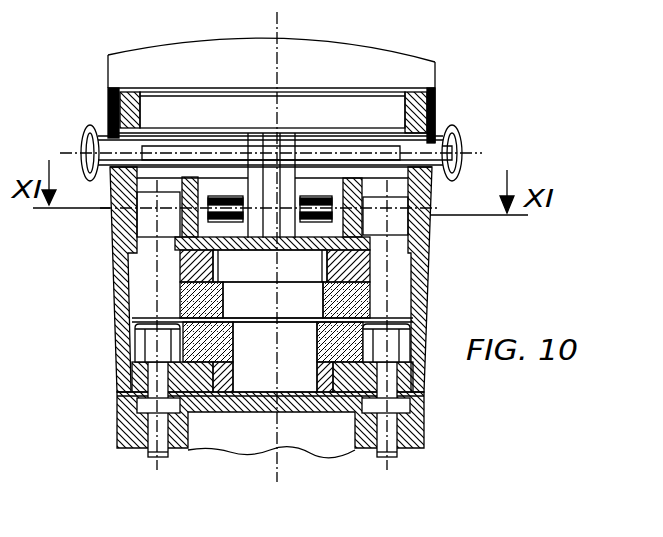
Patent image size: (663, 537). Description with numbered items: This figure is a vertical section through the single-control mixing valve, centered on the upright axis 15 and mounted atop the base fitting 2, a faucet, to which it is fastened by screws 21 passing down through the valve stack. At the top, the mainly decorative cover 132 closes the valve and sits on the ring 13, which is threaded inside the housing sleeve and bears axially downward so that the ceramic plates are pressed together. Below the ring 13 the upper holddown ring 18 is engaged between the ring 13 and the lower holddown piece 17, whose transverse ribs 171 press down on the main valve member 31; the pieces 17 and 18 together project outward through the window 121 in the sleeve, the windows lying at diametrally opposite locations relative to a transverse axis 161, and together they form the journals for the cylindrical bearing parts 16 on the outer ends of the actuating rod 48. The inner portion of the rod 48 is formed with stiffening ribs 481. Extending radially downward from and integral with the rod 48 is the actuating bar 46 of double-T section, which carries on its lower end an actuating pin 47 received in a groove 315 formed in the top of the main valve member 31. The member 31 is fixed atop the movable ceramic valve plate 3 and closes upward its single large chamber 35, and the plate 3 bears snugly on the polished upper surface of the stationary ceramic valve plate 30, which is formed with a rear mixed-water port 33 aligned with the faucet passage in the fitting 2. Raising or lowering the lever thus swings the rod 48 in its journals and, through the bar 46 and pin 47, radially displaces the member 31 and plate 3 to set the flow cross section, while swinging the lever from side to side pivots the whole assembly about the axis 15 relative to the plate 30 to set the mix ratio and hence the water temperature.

The upright axis 15 is at (279, 30).
The cover 132 is at (375, 62).
The transverse ribs 171 is at (350, 157).
The ring 13 is at (435, 104).
The upper holddown ring 18 is at (436, 132).
The transverse axis 161 is at (470, 160).
The cylindrical bearing parts 16 is at (441, 168).
The stiffening ribs 481 is at (203, 152).
The actuating bar 46 is at (270, 147).
The actuating rod 48 is at (328, 147).
The window 121 is at (100, 180).
The lower holddown piece 17 is at (113, 210).
The actuating pin 47 is at (210, 197).
The movable valve plate 3 is at (176, 300).
The groove 315 is at (225, 227).
The chamber 35 is at (288, 293).
The main valve member 31 is at (370, 257).
The rear mixed-water port 33 is at (295, 377).
The stationary valve plate 30 is at (230, 357).
The base fitting 2 is at (200, 440).
The screws 21 is at (147, 440).